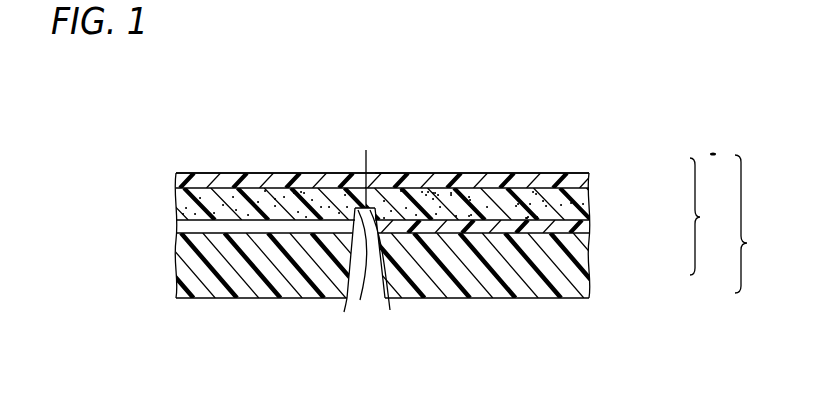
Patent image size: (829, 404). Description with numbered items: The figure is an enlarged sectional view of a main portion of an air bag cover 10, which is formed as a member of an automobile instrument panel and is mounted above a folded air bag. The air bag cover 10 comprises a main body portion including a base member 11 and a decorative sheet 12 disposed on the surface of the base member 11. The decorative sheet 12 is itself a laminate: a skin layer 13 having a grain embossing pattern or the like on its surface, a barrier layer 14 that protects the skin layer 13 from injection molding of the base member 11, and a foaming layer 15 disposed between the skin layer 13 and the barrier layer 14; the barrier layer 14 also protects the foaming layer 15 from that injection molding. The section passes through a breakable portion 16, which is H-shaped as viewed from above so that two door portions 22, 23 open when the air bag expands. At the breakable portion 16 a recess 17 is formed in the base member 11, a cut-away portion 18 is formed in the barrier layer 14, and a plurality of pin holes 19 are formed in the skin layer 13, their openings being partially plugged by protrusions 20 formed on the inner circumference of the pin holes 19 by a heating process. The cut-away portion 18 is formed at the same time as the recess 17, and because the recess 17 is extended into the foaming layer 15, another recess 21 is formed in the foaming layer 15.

The air bag cover 10 is at (742, 223).
The base member 11 is at (587, 283).
The decorative sheet 12 is at (709, 216).
The skin layer 13 is at (590, 177).
The barrier layer 14 is at (588, 230).
The foaming layer 15 is at (590, 197).
The breakable portion 16 is at (373, 173).
The recess 17 is at (352, 300).
The cut-away portion 18 is at (390, 310).
The pin holes 19 is at (362, 188).
The protrusions 20 is at (367, 150).
The another recess 21 is at (360, 300).
The door portion 22 is at (518, 173).
The door portion 23 is at (235, 173).